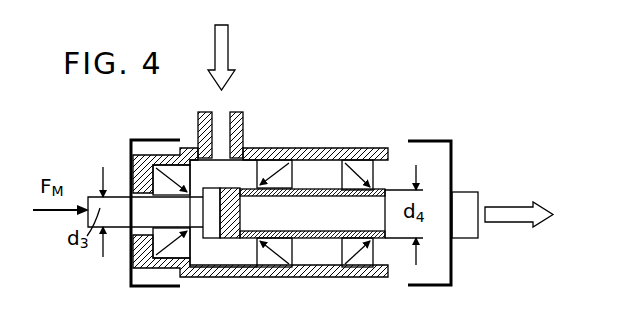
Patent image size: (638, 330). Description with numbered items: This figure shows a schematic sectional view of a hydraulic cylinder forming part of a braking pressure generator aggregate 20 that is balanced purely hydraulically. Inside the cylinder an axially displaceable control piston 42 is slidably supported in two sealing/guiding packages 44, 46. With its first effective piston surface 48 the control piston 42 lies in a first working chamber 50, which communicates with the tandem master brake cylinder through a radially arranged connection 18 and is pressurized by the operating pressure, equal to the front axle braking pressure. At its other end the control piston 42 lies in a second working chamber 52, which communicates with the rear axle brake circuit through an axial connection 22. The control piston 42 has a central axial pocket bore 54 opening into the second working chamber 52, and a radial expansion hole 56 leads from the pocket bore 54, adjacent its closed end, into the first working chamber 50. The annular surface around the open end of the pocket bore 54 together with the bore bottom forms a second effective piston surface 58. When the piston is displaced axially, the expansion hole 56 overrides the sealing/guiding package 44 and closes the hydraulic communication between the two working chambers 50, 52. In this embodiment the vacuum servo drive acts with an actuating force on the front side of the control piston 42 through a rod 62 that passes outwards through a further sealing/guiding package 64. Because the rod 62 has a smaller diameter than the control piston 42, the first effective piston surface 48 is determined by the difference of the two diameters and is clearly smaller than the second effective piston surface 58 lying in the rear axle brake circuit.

The connection 18 is at (223, 120).
The braking pressure generator aggregate 20 is at (436, 122).
The connection 22 is at (475, 208).
The control piston 42 is at (238, 192).
The sealing/guiding package 44 is at (278, 158).
The sealing/guiding package 46 is at (360, 163).
The first effective piston surface 48 is at (199, 150).
The first working chamber 50 is at (225, 255).
The second working chamber 52 is at (385, 255).
The pocket bore 54 is at (318, 222).
The radial expansion hole 56 is at (258, 242).
The second effective piston surface 58 is at (387, 200).
The rod 62 is at (122, 198).
The further sealing/guiding package 64 is at (175, 250).